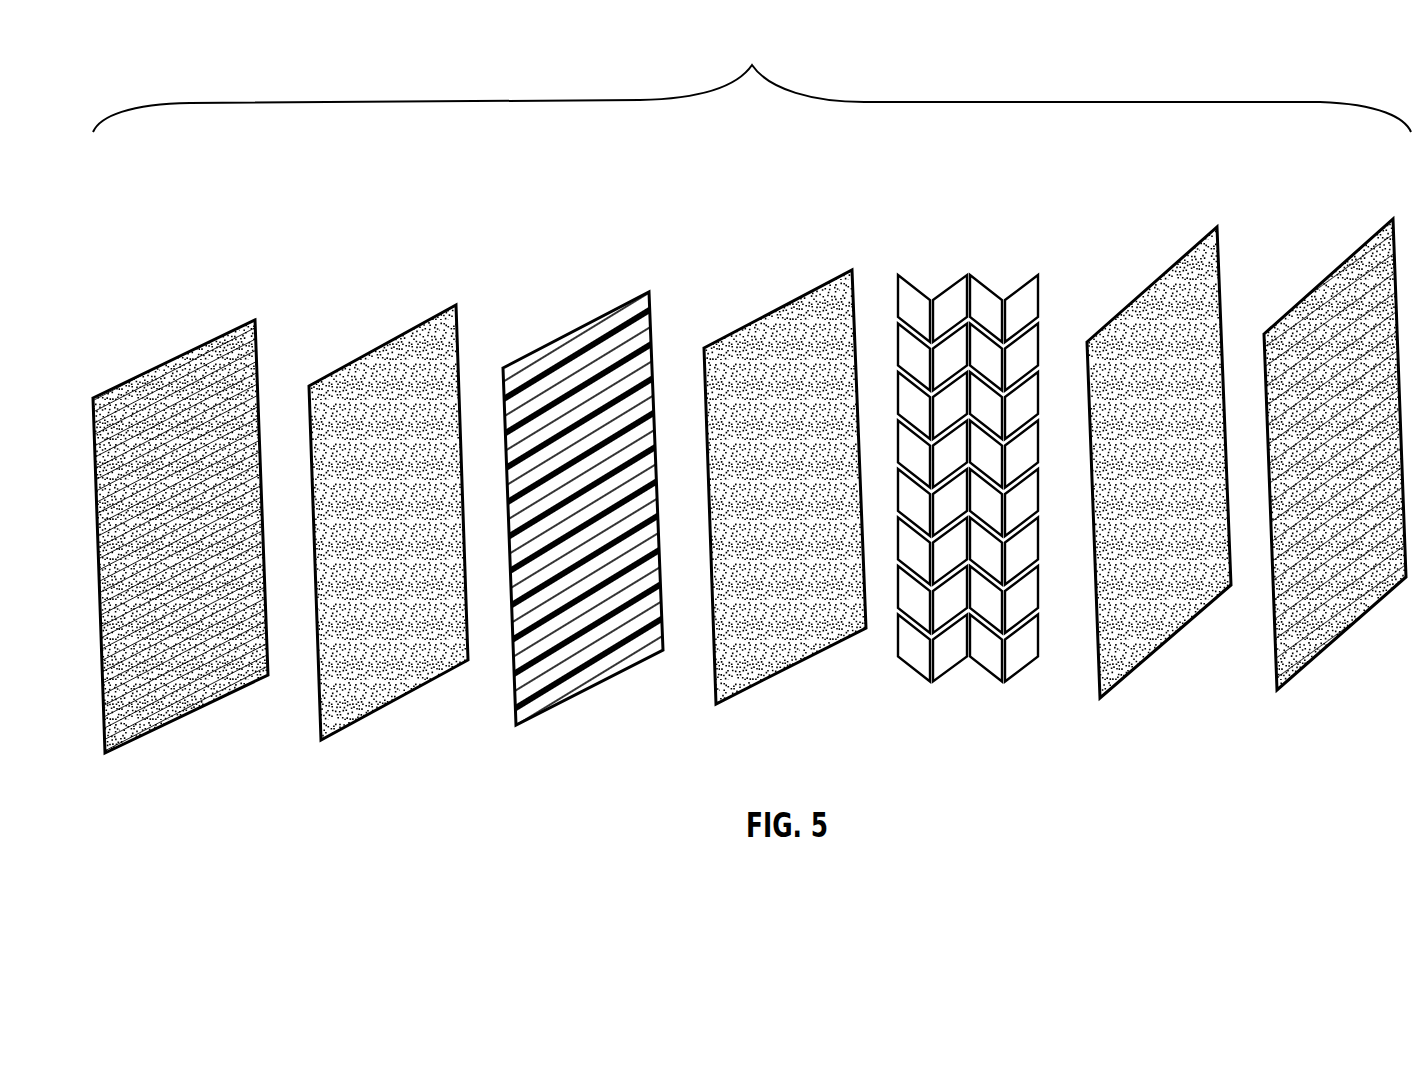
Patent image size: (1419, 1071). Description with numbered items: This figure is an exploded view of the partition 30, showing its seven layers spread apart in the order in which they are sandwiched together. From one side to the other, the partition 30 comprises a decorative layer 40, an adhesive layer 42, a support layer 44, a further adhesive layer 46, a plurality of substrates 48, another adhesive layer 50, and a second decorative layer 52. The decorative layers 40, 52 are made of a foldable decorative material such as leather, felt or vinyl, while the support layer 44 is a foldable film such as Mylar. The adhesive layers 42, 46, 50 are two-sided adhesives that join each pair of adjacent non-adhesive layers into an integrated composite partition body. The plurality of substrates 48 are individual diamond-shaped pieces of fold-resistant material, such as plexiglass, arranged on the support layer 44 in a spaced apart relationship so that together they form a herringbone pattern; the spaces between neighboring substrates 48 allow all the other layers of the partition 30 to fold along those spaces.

The partition 30 is at (752, 81).
The decorative layer 40 is at (178, 357).
The adhesive layer 42 is at (400, 334).
The support layer 44 is at (590, 322).
The adhesive layer 46 is at (792, 302).
The plurality of substrates 48 is at (898, 270).
The adhesive layer 50 is at (1174, 265).
The decorative layer 52 is at (1370, 239).